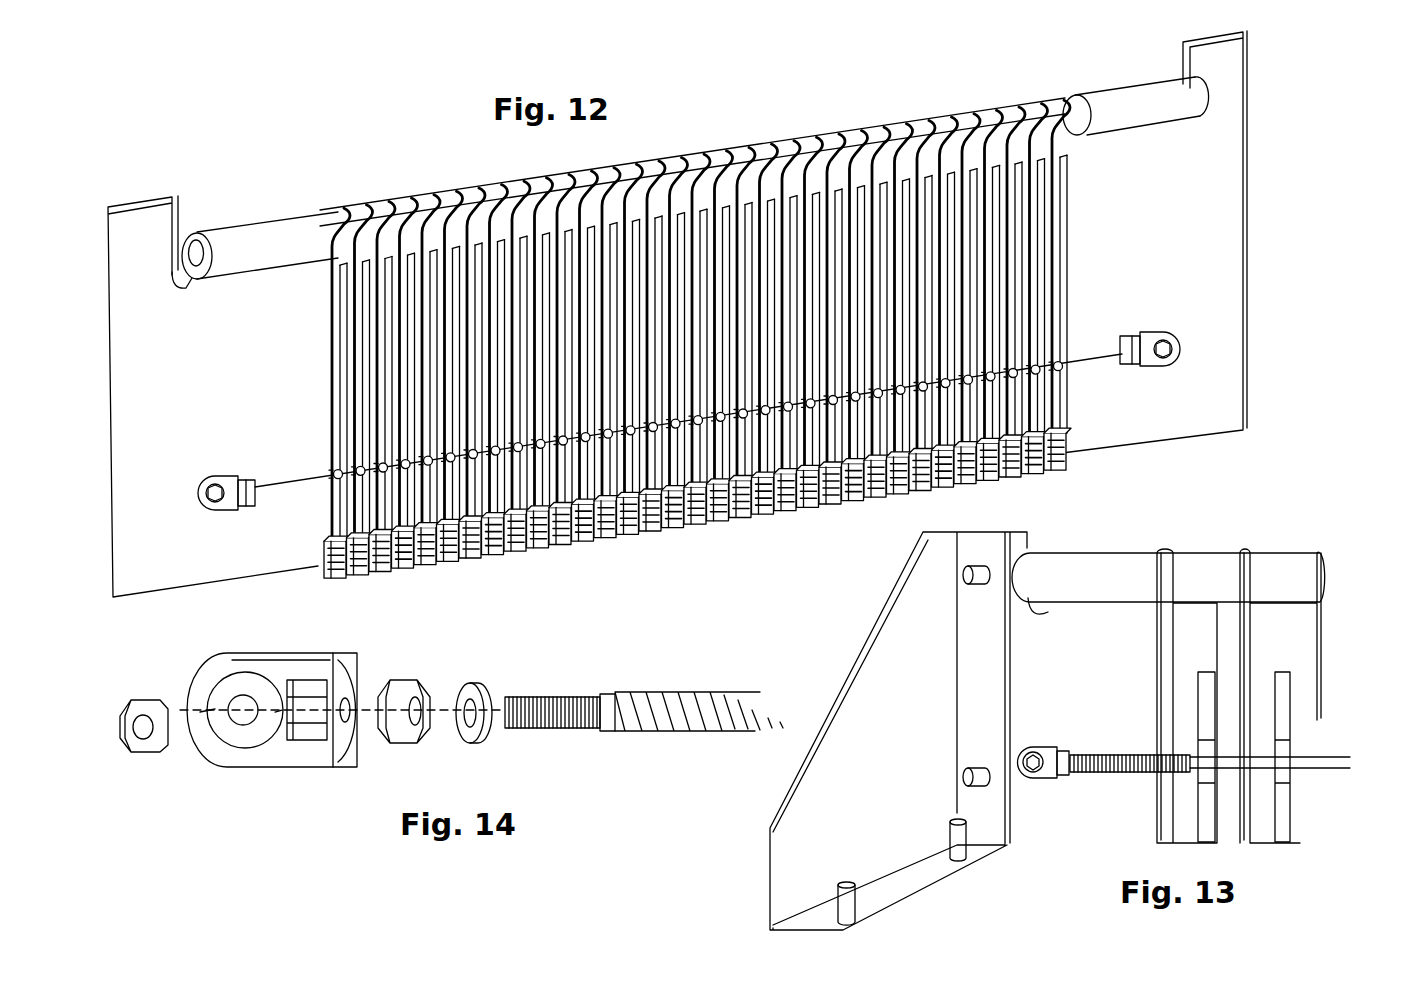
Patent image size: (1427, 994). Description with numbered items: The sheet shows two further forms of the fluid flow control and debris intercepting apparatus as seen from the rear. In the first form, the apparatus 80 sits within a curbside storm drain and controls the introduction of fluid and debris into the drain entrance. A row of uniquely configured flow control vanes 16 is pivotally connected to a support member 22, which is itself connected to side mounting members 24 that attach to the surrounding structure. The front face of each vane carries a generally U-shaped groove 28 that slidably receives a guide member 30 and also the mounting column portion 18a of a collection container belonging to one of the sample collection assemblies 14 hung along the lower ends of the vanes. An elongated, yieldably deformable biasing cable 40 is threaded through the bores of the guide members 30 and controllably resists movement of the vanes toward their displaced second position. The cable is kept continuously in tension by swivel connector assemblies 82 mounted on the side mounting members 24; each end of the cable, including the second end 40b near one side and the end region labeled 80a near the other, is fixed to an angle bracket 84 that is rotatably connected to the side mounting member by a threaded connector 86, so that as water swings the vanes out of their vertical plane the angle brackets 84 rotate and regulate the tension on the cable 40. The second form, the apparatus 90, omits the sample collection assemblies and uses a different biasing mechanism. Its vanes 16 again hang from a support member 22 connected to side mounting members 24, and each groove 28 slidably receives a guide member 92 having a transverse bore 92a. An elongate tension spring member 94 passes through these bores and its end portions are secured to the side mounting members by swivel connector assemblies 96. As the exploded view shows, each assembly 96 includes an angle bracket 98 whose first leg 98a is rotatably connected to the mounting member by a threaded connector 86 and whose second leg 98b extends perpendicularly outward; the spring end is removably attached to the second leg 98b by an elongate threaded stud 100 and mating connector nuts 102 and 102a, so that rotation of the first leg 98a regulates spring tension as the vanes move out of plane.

In FIG. 12, the fluid flow control and debris intercepting apparatus 80 is at (782, 104).
In FIG. 12, the support member 22 is at (335, 226).
In FIG. 13, the support member 22 is at (1163, 560).
In FIG. 12, the flow control vanes 16 is at (665, 319).
In FIG. 13, the flow control vanes 16 is at (1226, 726).
In FIG. 12, the U-shaped groove 28 is at (412, 347).
In FIG. 13, the U-shaped groove 28 is at (1206, 692).
In FIG. 12, the side mounting members 24 is at (206, 396).
In FIG. 12, the guide member 30 is at (348, 494).
In FIG. 12, the swivel connector assemblies 82 is at (682, 422).
In FIG. 12, the angle bracket 84 is at (222, 515).
In FIG. 12, the threaded connector 86 is at (205, 511).
In FIG. 12, the cable end 80a is at (258, 487).
In FIG. 12, the biasing cable 40 is at (1082, 358).
In FIG. 12, the second end of cable 40b is at (1115, 352).
In FIG. 12, the sample collection assemblies 14 is at (557, 547).
In FIG. 12, the mounting column portion 18a is at (810, 510).
In FIG. 13, the fluid flow control and debris intercepting apparatus 90 is at (1118, 535).
In FIG. 13, the guide member 92 is at (1090, 731).
In FIG. 13, the transverse bore 92a is at (1295, 757).
In FIG. 14, the tension spring member 94 is at (697, 703).
In FIG. 13, the tension spring member 94 is at (1247, 736).
In FIG. 13, the swivel connector assemblies 96 is at (1020, 787).
In FIG. 14, the angle bracket 98 is at (312, 716).
In FIG. 13, the angle bracket 98 is at (1083, 754).
In FIG. 14, the first leg 98a is at (263, 757).
In FIG. 13, the first leg 98a is at (1036, 776).
In FIG. 14, the second leg 98b is at (350, 676).
In FIG. 13, the second leg 98b is at (1064, 774).
In FIG. 14, the threaded studs 100 is at (549, 698).
In FIG. 14, the connector nut 102 is at (302, 682).
In FIG. 14, the connector nut 102a is at (406, 745).